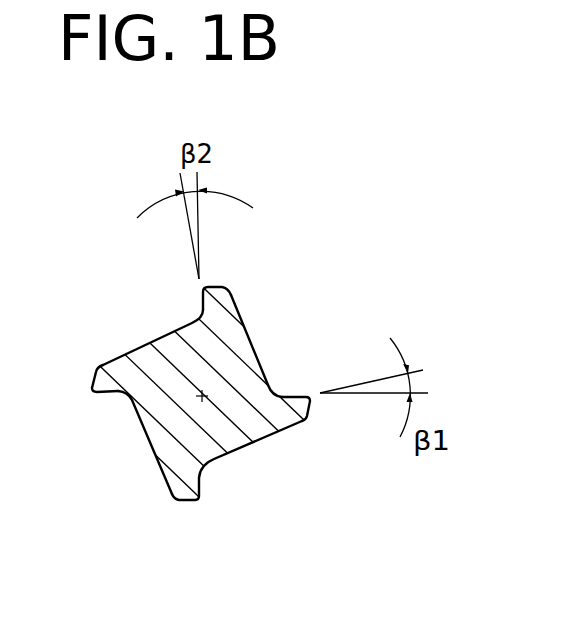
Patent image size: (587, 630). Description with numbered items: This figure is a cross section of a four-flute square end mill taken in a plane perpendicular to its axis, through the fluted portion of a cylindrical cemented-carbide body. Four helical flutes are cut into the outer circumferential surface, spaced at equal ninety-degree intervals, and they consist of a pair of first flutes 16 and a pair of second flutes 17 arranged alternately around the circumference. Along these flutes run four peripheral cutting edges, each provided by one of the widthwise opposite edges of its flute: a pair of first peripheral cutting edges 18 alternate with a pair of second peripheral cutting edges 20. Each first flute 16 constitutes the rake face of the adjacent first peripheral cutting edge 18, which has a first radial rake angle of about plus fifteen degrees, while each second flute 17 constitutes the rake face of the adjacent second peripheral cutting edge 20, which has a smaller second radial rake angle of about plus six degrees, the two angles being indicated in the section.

The first flutes 16 is at (252, 340).
The second flutes 17 is at (162, 340).
The first peripheral cutting edges 18 is at (310, 397).
The second peripheral cutting edges 20 is at (203, 285).